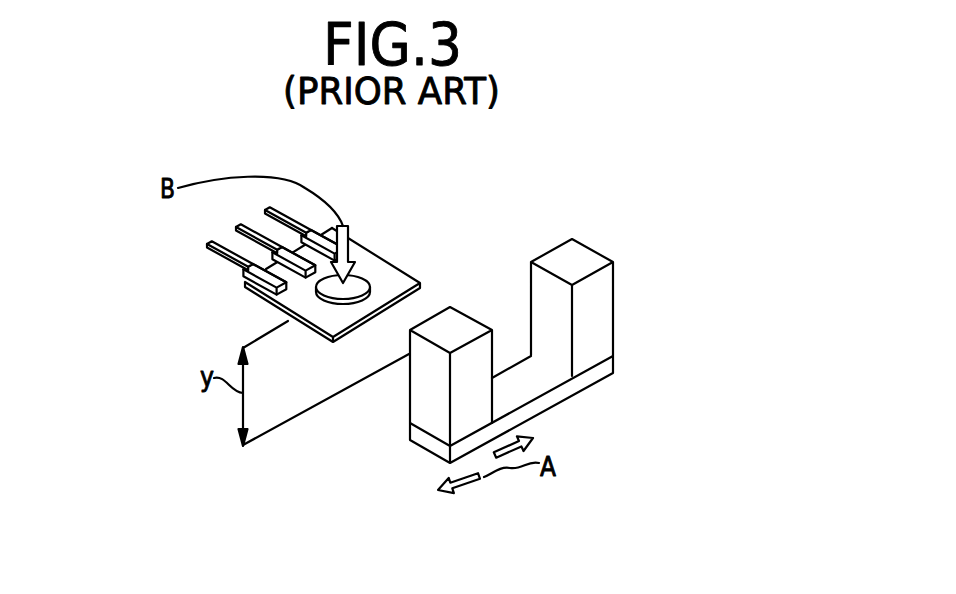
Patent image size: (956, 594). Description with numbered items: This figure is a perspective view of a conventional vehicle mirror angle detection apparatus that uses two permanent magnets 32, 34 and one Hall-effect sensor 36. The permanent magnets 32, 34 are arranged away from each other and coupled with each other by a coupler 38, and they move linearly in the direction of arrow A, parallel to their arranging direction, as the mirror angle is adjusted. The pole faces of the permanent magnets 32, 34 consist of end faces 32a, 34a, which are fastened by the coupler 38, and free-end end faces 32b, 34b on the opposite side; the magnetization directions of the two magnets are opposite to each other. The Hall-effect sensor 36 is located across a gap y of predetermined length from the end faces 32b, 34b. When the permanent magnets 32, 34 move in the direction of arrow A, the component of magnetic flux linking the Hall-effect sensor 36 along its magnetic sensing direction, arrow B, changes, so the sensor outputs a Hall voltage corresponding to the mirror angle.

The permanent magnet 32 is at (597, 322).
The end face 32a is at (580, 357).
The end face (free end) 32b is at (553, 258).
The permanent magnet 34 is at (419, 393).
The end face 34a is at (428, 426).
The end face (free end) 34b is at (460, 326).
The Hall-effect sensor 36 is at (293, 300).
The coupler 38 is at (560, 399).